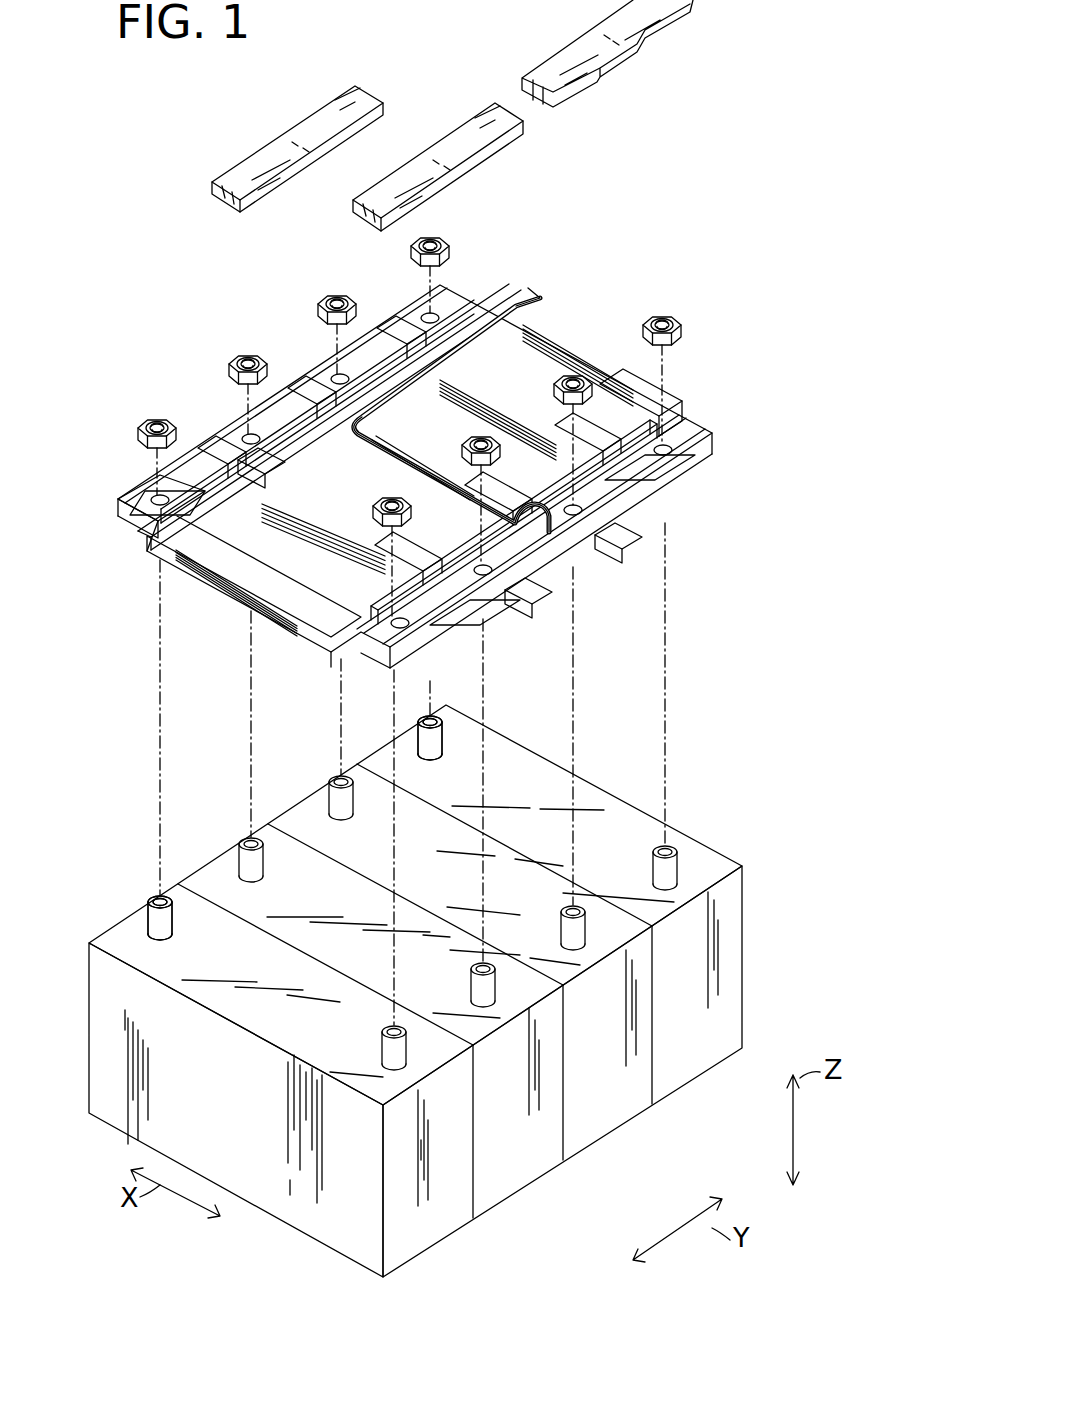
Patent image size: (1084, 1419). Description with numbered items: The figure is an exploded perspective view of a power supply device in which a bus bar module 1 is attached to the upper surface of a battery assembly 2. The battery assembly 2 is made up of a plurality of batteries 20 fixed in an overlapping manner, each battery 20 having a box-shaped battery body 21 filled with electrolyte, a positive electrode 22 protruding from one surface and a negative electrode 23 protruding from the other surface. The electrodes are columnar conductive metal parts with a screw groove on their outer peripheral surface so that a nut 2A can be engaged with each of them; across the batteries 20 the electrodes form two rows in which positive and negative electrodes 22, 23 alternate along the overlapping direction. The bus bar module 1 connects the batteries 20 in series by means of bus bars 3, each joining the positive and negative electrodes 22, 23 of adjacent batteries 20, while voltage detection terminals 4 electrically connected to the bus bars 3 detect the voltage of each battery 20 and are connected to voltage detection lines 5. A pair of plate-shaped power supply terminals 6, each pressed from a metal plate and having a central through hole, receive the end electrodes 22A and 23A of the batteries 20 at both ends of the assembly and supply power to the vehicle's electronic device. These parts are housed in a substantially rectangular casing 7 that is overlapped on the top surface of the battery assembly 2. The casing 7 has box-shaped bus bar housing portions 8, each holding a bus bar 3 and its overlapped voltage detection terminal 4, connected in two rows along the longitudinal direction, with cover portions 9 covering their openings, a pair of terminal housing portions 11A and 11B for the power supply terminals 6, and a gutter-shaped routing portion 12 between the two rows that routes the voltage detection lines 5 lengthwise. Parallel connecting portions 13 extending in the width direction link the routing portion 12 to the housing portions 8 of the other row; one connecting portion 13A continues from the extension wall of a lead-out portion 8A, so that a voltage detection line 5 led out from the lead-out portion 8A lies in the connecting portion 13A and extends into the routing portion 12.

The bus bar module 1 is at (406, 335).
The battery assembly 2 is at (446, 1000).
The nut 2A is at (412, 247).
The bus bar 3 is at (290, 390).
The voltage detection terminal 4 is at (330, 360).
The voltage detection line 5 is at (390, 468).
The power supply terminal 6 is at (140, 490).
The casing 7 is at (715, 425).
The bus bar housing portion 8 is at (338, 370).
The lead-out portion 8A is at (549, 535).
The cover portion 9 is at (320, 110).
The terminal housing portion 11A is at (463, 297).
The terminal housing portion 11B is at (118, 512).
The routing portion 12 is at (512, 297).
The connecting portion 13 is at (215, 582).
The connecting portion 13A is at (395, 462).
The battery 20 is at (712, 1060).
The battery body 21 is at (722, 930).
The positive electrode 22 is at (428, 848).
The electrode 22A is at (172, 920).
The negative electrode 23 is at (262, 862).
The electrode 23A is at (440, 740).